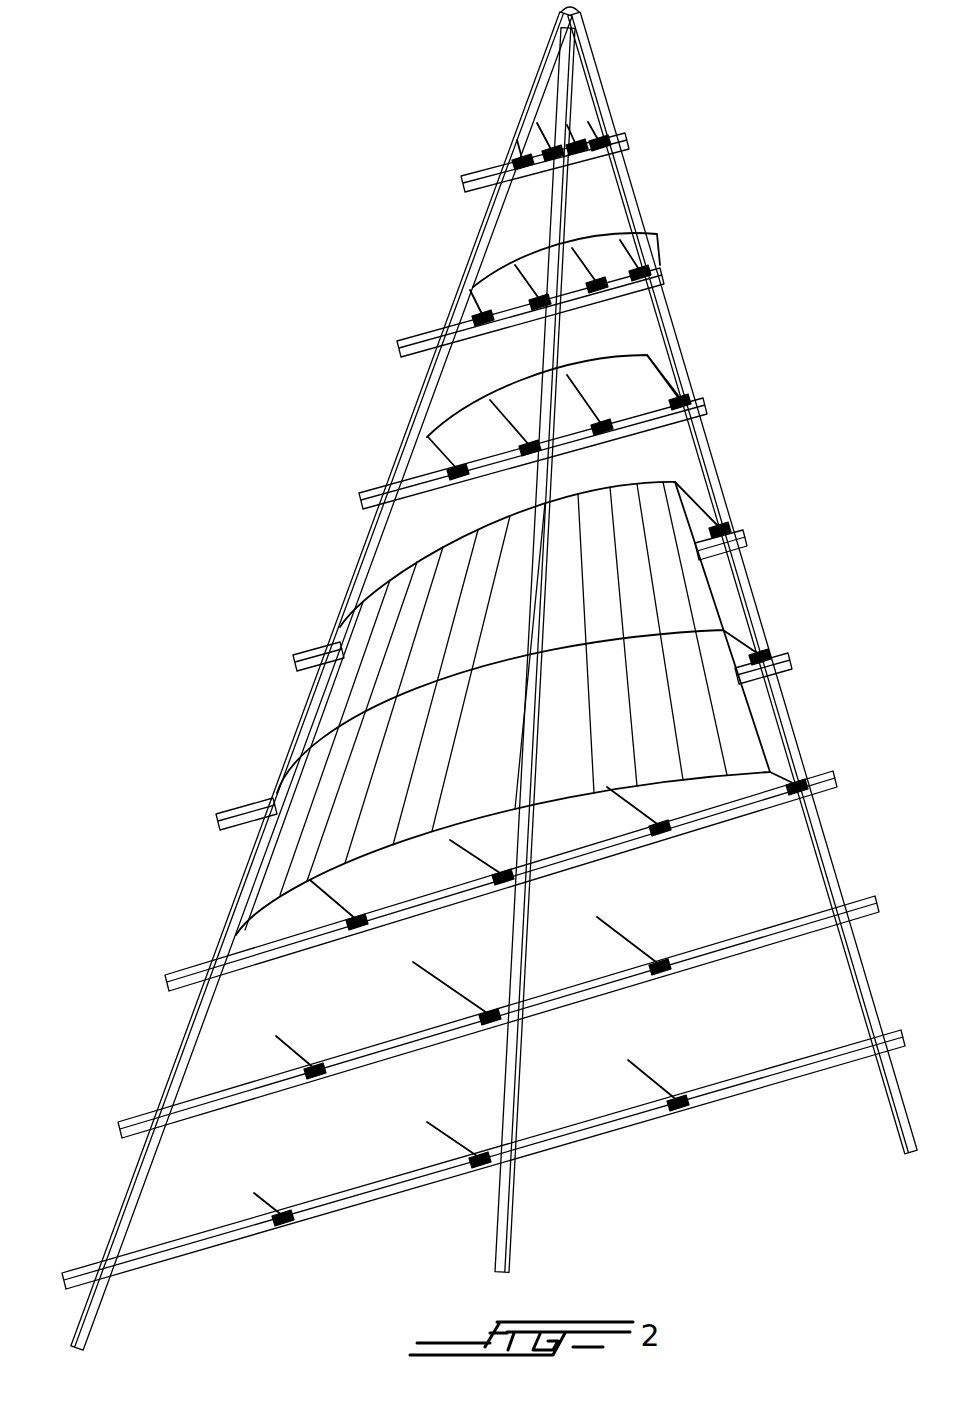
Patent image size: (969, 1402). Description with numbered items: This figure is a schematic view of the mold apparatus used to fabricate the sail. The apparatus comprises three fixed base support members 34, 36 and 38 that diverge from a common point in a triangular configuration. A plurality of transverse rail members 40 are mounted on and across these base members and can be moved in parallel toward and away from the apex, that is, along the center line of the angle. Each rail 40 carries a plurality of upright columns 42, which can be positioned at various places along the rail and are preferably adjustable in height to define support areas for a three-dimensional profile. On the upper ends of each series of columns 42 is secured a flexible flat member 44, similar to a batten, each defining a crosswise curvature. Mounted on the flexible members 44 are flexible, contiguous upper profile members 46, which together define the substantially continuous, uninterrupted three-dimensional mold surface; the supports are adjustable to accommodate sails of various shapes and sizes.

The base support member 34 is at (100, 1300).
The base support member 36 is at (512, 1233).
The base support member 38 is at (893, 1118).
The transverse rail member 40 is at (745, 951).
The upright column 42 is at (619, 928).
The flexible flat member 44 is at (629, 344).
The upper profile member 46 is at (718, 710).